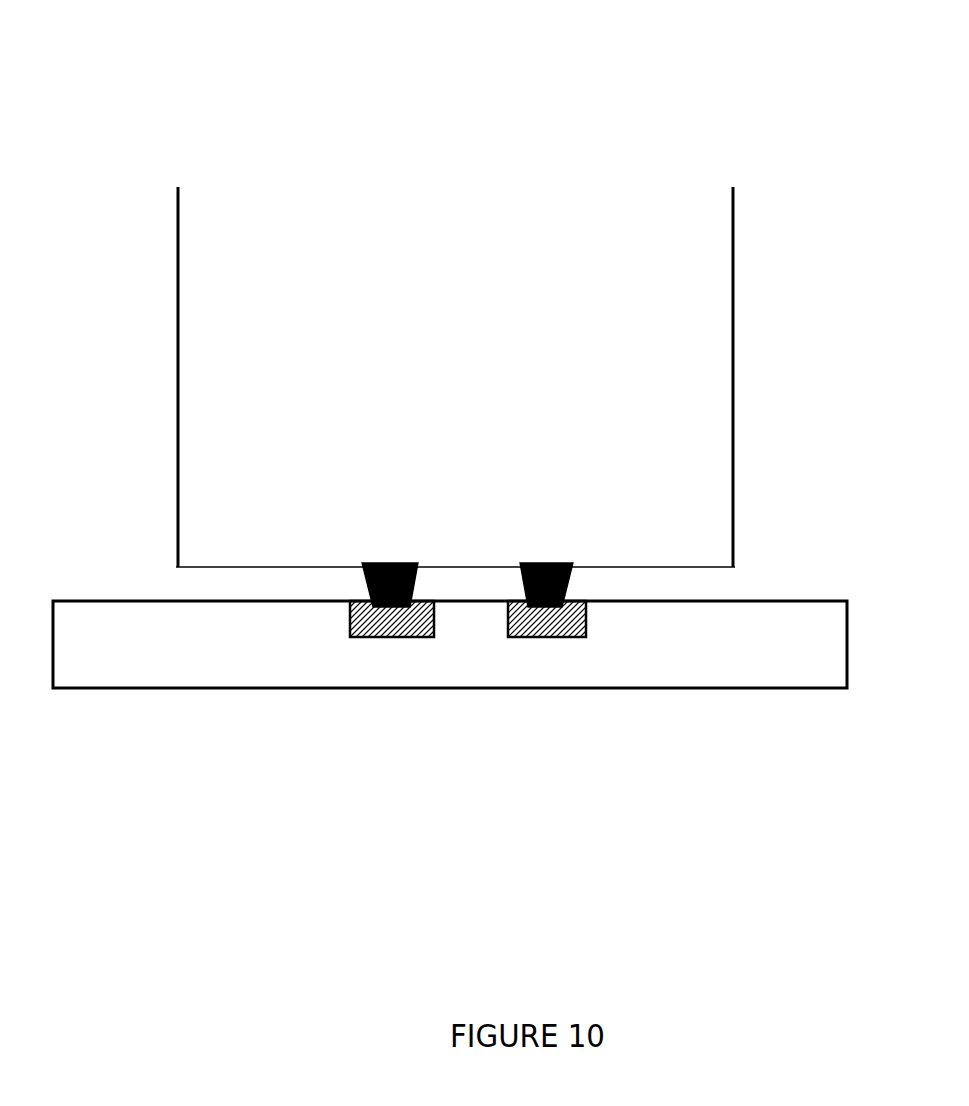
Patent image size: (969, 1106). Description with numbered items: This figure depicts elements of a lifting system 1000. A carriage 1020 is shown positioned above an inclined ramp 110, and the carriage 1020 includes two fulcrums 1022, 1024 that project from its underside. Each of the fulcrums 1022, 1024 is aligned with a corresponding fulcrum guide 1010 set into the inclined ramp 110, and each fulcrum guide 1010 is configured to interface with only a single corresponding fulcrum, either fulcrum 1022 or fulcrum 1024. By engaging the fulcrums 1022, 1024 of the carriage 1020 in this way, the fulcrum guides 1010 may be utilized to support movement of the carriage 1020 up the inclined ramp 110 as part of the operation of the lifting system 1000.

The lifting system 1000 is at (109, 82).
The carriage 1020 is at (170, 343).
The fulcrum 1024 is at (404, 536).
The fulcrum 1022 is at (530, 536).
The fulcrum guide 1010 is at (343, 663).
The inclined ramp 110 is at (648, 684).